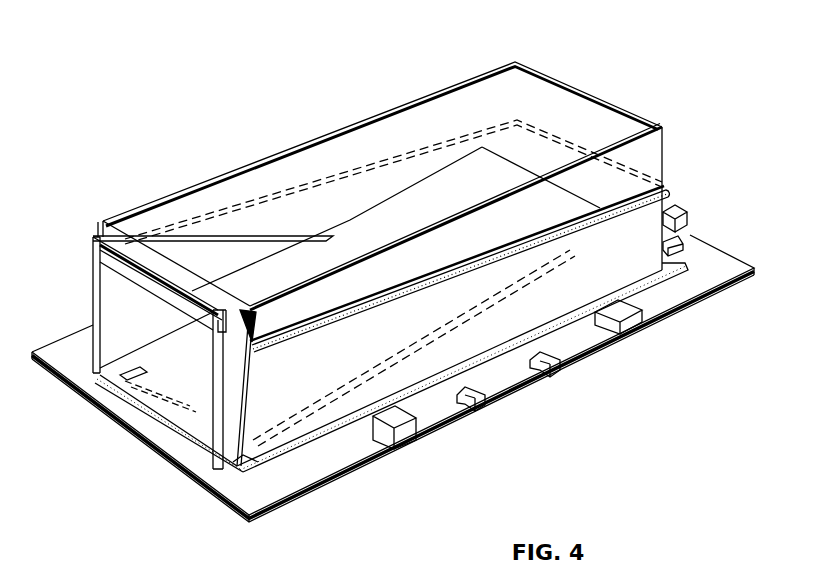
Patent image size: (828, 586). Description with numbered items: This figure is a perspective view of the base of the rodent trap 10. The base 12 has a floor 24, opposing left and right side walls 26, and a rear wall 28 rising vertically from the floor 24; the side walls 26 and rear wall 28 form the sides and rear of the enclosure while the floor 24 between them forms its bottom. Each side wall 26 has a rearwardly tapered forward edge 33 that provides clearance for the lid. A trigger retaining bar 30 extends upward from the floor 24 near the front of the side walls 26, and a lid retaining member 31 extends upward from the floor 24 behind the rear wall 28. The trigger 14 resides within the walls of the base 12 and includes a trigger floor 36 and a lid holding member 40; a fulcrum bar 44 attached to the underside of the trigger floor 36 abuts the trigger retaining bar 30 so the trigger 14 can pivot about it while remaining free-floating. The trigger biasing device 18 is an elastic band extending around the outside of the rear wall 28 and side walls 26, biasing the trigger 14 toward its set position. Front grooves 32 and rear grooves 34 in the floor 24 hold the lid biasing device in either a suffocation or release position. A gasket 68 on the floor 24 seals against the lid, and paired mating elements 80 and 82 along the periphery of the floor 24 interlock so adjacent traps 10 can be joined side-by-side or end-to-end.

The rodent trap 10 is at (173, 118).
The base 12 is at (702, 296).
The trigger 14 is at (375, 230).
The trigger biasing device 18 is at (662, 186).
The floor 24 is at (319, 471).
The side walls 26 is at (476, 76).
The rear wall 28 is at (555, 80).
The trigger retaining bar 30 is at (175, 408).
The lid retaining member 31 is at (688, 243).
The front grooves 32 is at (487, 407).
The forward edge 33 is at (297, 450).
The rear grooves 34 is at (572, 366).
The trigger floor 36 is at (198, 371).
The lid holding member 40 is at (115, 257).
The fulcrum bar 44 is at (152, 378).
The gasket 68 is at (317, 440).
The mating element 80 is at (687, 217).
The mating element 82 is at (393, 449).